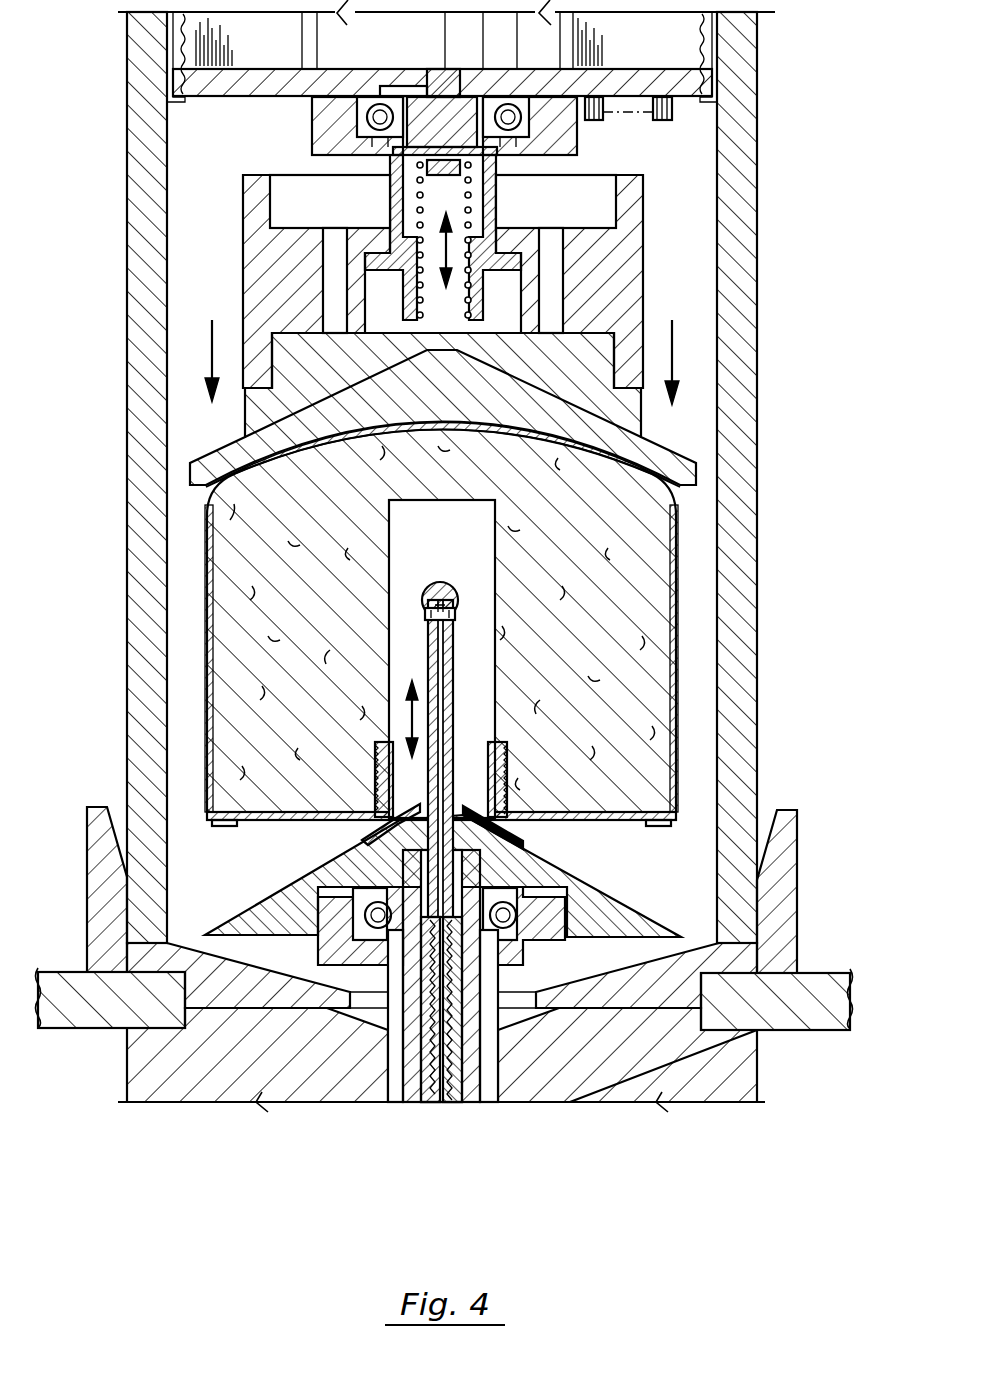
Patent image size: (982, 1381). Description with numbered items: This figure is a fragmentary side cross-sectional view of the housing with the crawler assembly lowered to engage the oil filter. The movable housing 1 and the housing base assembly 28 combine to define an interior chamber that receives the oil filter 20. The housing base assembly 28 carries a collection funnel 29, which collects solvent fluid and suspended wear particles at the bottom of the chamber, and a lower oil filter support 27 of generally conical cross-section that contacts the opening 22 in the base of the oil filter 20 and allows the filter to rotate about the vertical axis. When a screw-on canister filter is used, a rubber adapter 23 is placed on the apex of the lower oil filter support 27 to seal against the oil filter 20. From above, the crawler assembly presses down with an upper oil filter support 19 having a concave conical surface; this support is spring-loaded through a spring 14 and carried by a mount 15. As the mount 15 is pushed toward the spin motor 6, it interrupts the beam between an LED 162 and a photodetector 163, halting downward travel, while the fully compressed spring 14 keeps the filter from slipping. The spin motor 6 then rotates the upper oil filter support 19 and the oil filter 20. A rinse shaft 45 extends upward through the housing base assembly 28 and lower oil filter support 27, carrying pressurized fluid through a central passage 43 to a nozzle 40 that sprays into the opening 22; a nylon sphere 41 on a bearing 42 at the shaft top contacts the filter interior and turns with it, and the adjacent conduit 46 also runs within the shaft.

The movable housing 1 is at (147, 655).
The spin motor 6 is at (408, 49).
The spring 14 is at (470, 192).
The mount 15 is at (300, 292).
The upper oil filter support 19 is at (588, 386).
The oil filter 20 is at (591, 650).
The opening 22 is at (488, 712).
The rubber adapter 23 is at (522, 846).
The lower oil filter support 27 is at (600, 910).
The housing base assembly 28 is at (107, 915).
The collection funnel 29 is at (263, 968).
The nozzle 40 is at (430, 634).
The nylon sphere 41 is at (440, 588).
The bearing 42 is at (426, 618).
The central passage 43 is at (438, 1105).
The rinse shaft 45 is at (456, 665).
The outer conduit 46 is at (421, 1105).
The LED 162 is at (595, 121).
The photodetector 163 is at (663, 121).